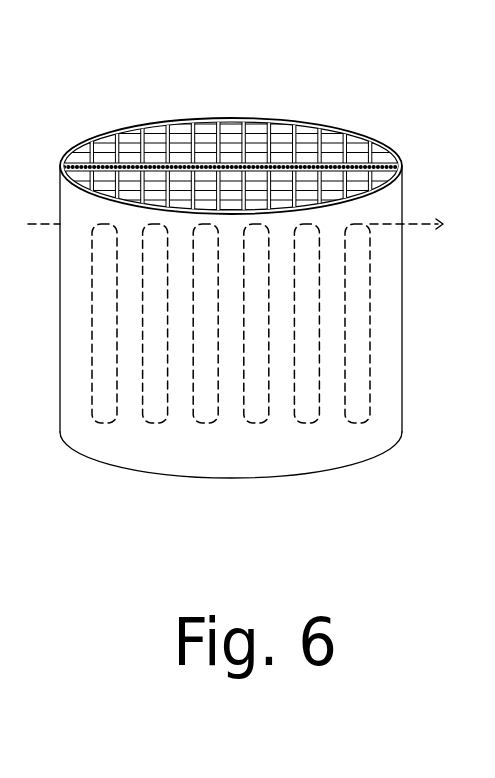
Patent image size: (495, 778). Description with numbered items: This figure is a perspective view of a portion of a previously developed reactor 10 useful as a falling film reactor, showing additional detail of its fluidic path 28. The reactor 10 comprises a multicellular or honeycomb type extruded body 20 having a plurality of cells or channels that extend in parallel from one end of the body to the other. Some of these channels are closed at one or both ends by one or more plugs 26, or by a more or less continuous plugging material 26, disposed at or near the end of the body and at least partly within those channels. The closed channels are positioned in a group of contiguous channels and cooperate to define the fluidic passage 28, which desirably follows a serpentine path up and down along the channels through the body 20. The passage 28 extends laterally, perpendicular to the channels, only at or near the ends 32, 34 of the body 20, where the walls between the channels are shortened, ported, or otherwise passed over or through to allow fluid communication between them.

The reactor 10 is at (127, 486).
The extruded body 20 is at (222, 457).
The plugs 26 is at (230, 167).
The fluidic passage 28 is at (372, 297).
The end of the body 32 is at (247, 490).
The end of the body 34 is at (235, 104).